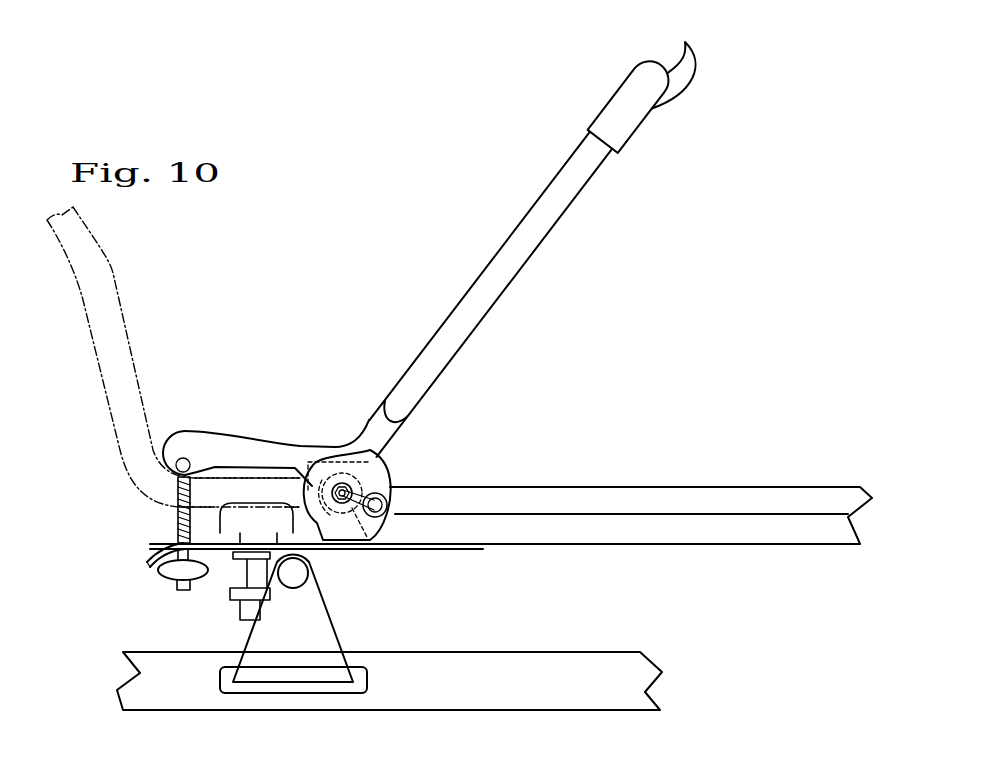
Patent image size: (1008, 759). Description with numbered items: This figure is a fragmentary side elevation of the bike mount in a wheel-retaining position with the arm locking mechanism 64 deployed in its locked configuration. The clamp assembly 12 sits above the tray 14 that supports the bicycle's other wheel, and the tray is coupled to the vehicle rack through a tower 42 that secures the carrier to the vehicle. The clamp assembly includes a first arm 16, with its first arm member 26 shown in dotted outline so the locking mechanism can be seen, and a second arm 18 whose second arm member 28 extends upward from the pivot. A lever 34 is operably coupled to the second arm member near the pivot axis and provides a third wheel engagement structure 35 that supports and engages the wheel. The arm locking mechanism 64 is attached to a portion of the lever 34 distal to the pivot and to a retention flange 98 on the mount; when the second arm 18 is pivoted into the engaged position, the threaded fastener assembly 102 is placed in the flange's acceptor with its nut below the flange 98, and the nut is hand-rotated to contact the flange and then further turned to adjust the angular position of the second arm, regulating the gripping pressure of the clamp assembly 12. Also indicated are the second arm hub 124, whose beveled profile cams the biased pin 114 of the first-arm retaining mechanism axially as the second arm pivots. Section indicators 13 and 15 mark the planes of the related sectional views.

The clamp assembly 12 is at (207, 319).
The section line 13 is at (585, 415).
The tray 14 is at (680, 533).
The section line 15 is at (270, 455).
The first arm 16 is at (88, 427).
The second arm 18 is at (313, 393).
The first arm member 26 is at (92, 325).
The second arm member 28 is at (539, 200).
The lever 34 is at (235, 445).
The third wheel engagement structure 35 is at (195, 432).
The tower 42 is at (262, 650).
The arm locking mechanism 64 is at (148, 517).
The flange 98 is at (156, 556).
The threaded fastener assembly 102 is at (180, 576).
The pin 114 is at (397, 497).
The second arm hub 124 is at (381, 475).